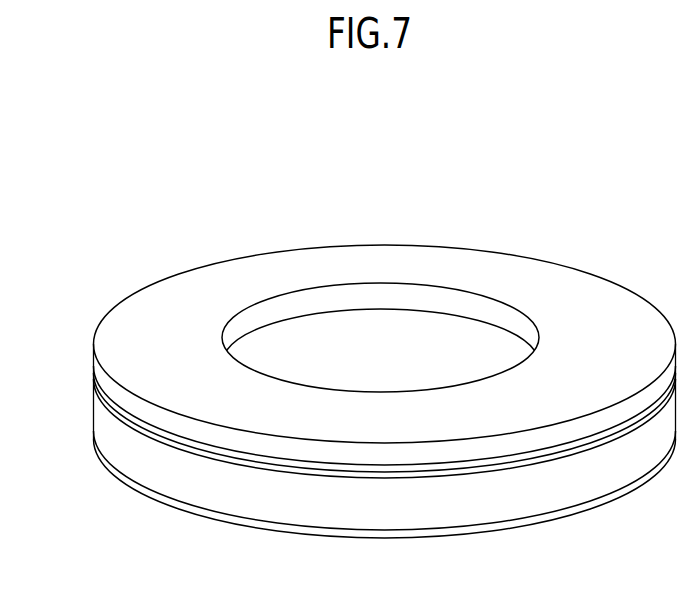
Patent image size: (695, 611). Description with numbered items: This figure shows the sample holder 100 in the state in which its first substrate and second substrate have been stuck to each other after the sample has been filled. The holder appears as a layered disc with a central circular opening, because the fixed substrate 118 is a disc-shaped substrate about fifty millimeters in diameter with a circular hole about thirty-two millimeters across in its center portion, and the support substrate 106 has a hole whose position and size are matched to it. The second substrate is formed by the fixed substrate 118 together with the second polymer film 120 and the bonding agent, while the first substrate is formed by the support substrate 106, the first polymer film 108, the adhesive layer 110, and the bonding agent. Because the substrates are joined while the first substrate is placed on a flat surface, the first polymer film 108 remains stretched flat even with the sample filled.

The sample holder 100 is at (439, 212).
The fixed substrate 118 is at (103, 331).
The second polymer film 120 is at (95, 389).
The adhesive layer 110 is at (96, 407).
The support substrate 106 is at (105, 434).
The first polymer film 108 is at (110, 470).